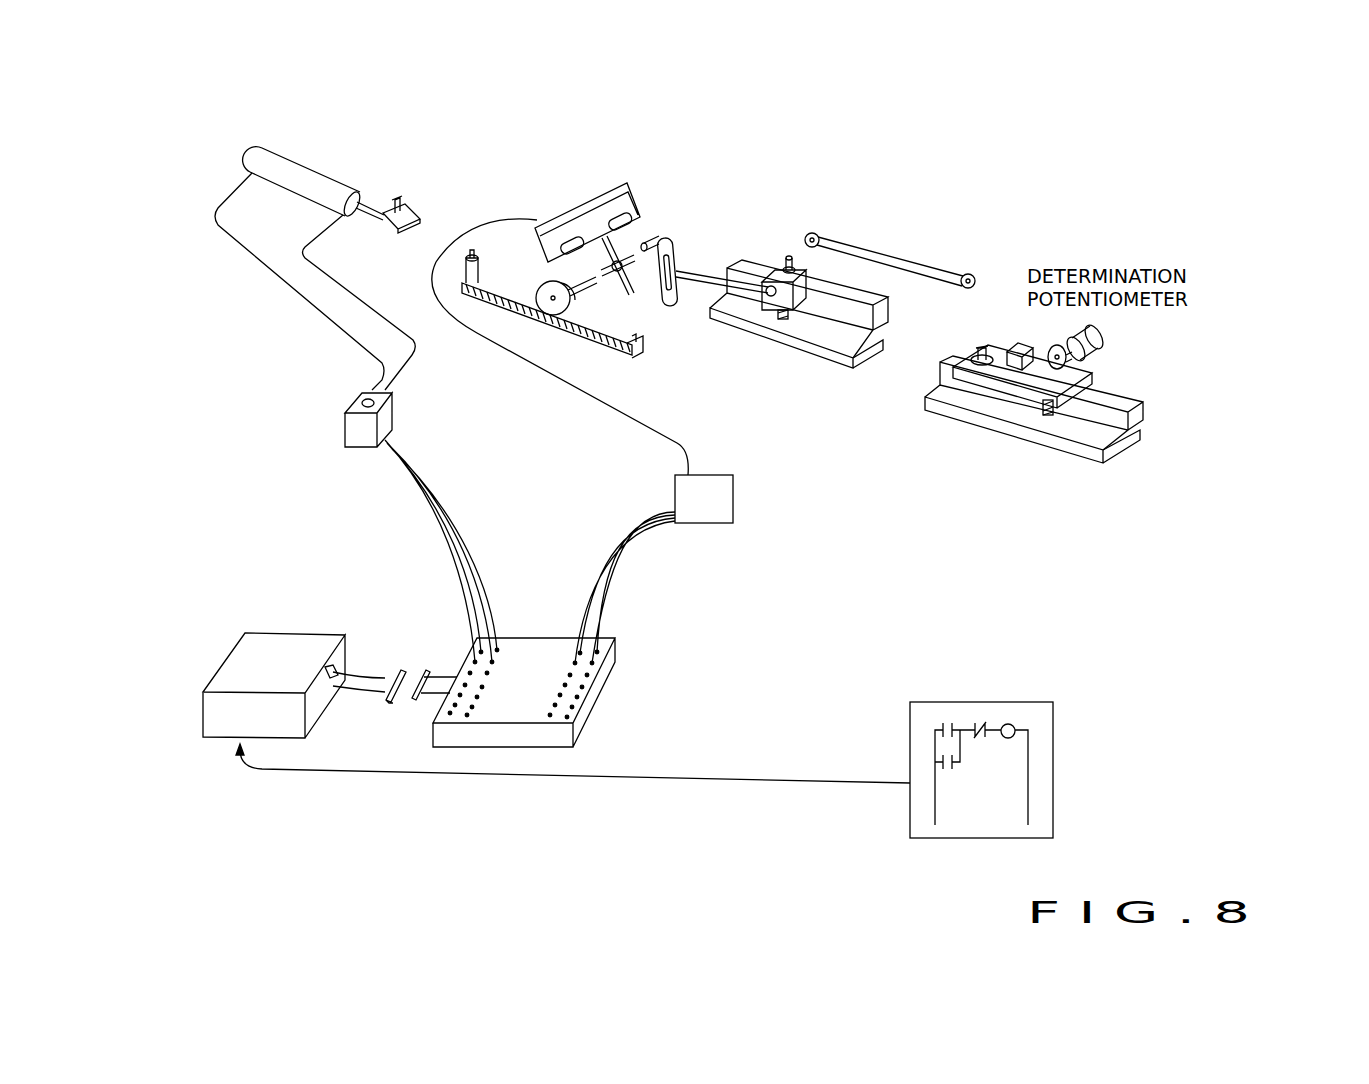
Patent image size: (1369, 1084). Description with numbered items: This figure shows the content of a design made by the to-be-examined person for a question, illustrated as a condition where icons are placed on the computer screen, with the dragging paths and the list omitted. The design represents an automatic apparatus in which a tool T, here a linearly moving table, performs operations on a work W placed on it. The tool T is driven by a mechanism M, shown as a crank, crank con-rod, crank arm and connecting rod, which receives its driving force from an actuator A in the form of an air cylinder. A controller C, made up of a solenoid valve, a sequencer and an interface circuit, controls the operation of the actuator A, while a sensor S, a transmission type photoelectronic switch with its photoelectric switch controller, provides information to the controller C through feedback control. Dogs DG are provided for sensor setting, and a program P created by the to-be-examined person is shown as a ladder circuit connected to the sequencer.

The actuator A is at (306, 254).
The sensor S is at (716, 389).
The mechanism M is at (677, 396).
The controller C is at (467, 570).
The dogs for sensor setting DG is at (774, 330).
The tool T is at (1126, 392).
The work W is at (1020, 344).
The program P is at (644, 758).